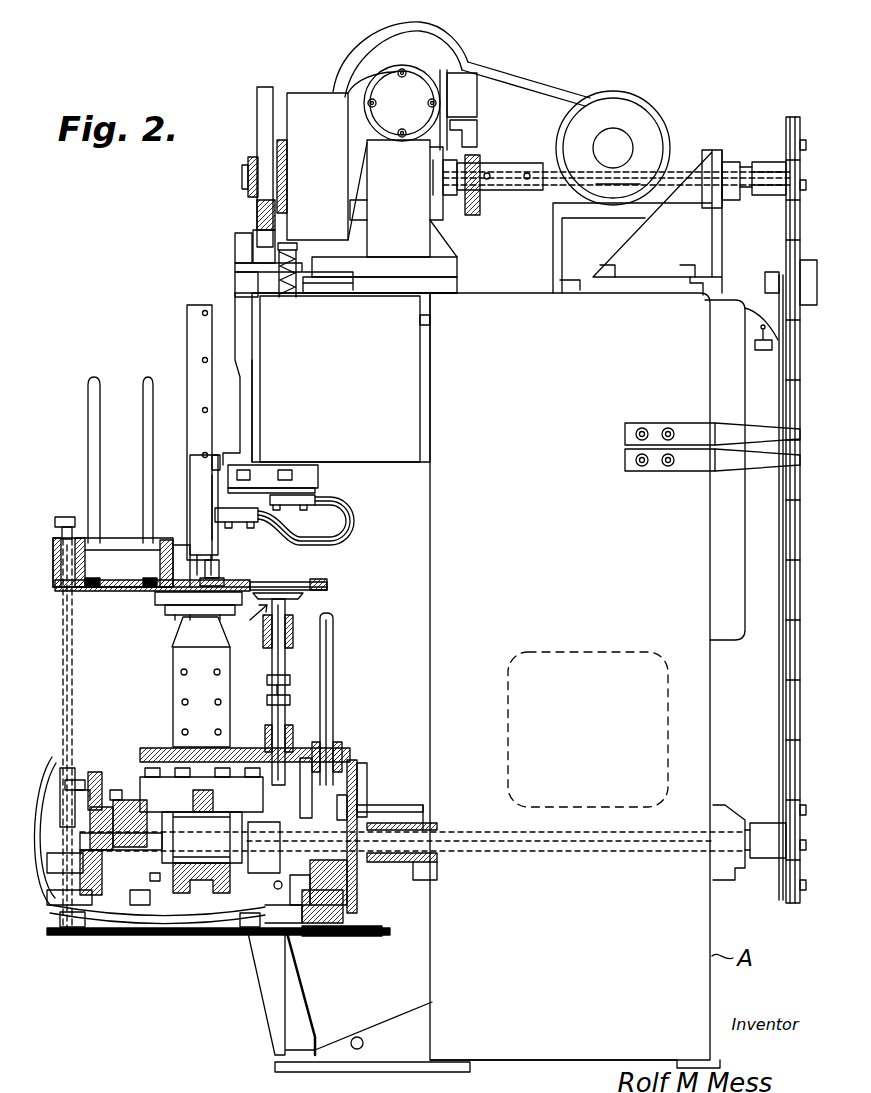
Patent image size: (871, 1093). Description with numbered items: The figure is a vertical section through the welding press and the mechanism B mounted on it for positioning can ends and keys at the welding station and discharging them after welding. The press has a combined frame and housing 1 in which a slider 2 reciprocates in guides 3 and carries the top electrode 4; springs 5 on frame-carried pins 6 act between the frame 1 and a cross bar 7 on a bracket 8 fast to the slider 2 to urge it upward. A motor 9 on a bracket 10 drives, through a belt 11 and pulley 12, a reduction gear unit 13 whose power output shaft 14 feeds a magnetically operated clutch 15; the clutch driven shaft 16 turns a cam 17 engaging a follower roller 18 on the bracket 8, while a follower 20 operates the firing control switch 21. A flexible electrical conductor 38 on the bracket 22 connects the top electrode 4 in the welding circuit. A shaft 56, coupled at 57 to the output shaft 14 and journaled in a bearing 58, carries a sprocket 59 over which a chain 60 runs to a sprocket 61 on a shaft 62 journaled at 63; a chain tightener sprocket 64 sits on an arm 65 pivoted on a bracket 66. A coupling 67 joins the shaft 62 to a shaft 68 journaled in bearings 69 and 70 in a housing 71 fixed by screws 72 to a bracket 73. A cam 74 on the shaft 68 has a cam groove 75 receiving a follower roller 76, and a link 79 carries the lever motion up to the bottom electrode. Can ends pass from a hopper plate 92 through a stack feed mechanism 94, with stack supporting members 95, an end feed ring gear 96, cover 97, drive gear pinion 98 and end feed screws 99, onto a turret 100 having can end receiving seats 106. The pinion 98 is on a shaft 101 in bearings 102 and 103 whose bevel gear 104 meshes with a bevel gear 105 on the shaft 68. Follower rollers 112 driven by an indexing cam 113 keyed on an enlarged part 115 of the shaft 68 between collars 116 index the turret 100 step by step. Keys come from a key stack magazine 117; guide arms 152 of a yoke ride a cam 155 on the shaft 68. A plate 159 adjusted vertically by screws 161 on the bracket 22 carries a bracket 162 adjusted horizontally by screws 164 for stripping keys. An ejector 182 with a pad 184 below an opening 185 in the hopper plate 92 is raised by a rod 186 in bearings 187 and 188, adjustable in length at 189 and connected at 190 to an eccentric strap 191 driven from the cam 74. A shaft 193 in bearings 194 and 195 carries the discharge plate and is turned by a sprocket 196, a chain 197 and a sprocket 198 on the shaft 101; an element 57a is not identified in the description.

The combined frame and housing 1 is at (712, 670).
The slider 2 is at (240, 338).
The guides 3 is at (200, 290).
The top electrode 4 is at (214, 578).
The springs 5 is at (288, 283).
The pins 6 is at (292, 268).
The cross bar 7 is at (290, 255).
The bracket 8 is at (240, 236).
The motor 9 is at (613, 110).
The bracket 10 is at (553, 260).
The belt 11 is at (532, 74).
The pulley 12 is at (430, 60).
The reduction gear unit 13 is at (380, 179).
The power output shaft 14 is at (458, 188).
The magnetically operated clutch 15 is at (302, 100).
The driven shaft 16 is at (285, 170).
The cam 17 is at (260, 95).
The follower roller 18 is at (250, 200).
The follower 20 is at (478, 131).
The firing control switch 21 is at (477, 100).
The bracket 22 is at (240, 470).
The flexible electrical conductor 38 is at (345, 512).
The shaft 56 is at (612, 170).
The coupling 57 is at (514, 166).
The housing 57a is at (174, 658).
The bearing 58 is at (732, 165).
The sprocket 59 is at (789, 140).
The chain 60 is at (787, 230).
The sprocket 61 is at (787, 835).
The shaft 62 is at (572, 830).
The bearing 63 is at (720, 850).
The chain tightener sprocket 64 is at (787, 252).
The arm 65 is at (762, 362).
The bracket 66 is at (660, 423).
The coupling 67 is at (430, 870).
The shaft 68 is at (420, 825).
The bearing 69 is at (360, 805).
The bearing 70 is at (121, 825).
The housing 71 is at (145, 937).
The screws 72 is at (362, 780).
The bracket 73 is at (420, 800).
The cam 74 is at (258, 927).
The cam groove 75 is at (306, 806).
The follower roller 76 is at (348, 876).
The link 79 is at (481, 208).
The hopper plate 92 is at (310, 590).
The can end stack feed mechanism 94 is at (80, 529).
The stack supporting members 95 is at (92, 385).
The end feed ring gear 96 is at (160, 551).
The cover 97 is at (165, 540).
The end feed drive gear pinion 98 is at (62, 535).
The end feed screws 99 is at (92, 580).
The turret 100 is at (82, 598).
The shaft 101 is at (72, 642).
The bearing 102 is at (54, 790).
The bearing 103 is at (58, 916).
The bevel gear 104 is at (45, 875).
The bevel gear 105 is at (100, 795).
The can end receiving seats 106 is at (122, 592).
The follower rollers 112 is at (240, 750).
The indexing cam 113 is at (200, 915).
The enlarged part 115 is at (202, 837).
The collars 116 is at (142, 862).
The key stack magazine 117 is at (190, 307).
The guide arms 152 is at (125, 777).
The cam 155 is at (105, 917).
The plate 159 is at (218, 562).
The screws 161 is at (255, 440).
The bracket 162 is at (205, 496).
The screws 164 is at (212, 460).
The ejector 182 is at (249, 623).
The pad 184 is at (300, 598).
The opening 185 is at (292, 588).
The rod 186 is at (285, 662).
The bearing 187 is at (295, 628).
The bearing 188 is at (290, 712).
The length adjustment 189 is at (265, 690).
The pivotal connection 190 is at (305, 770).
The eccentric strap 191 is at (274, 886).
The shaft 193 is at (336, 665).
The bearing 194 is at (322, 790).
The bearing 195 is at (348, 893).
The sprocket 196 is at (370, 940).
The chain 197 is at (175, 937).
The sprocket 198 is at (75, 935).
The mechanism B is at (337, 655).